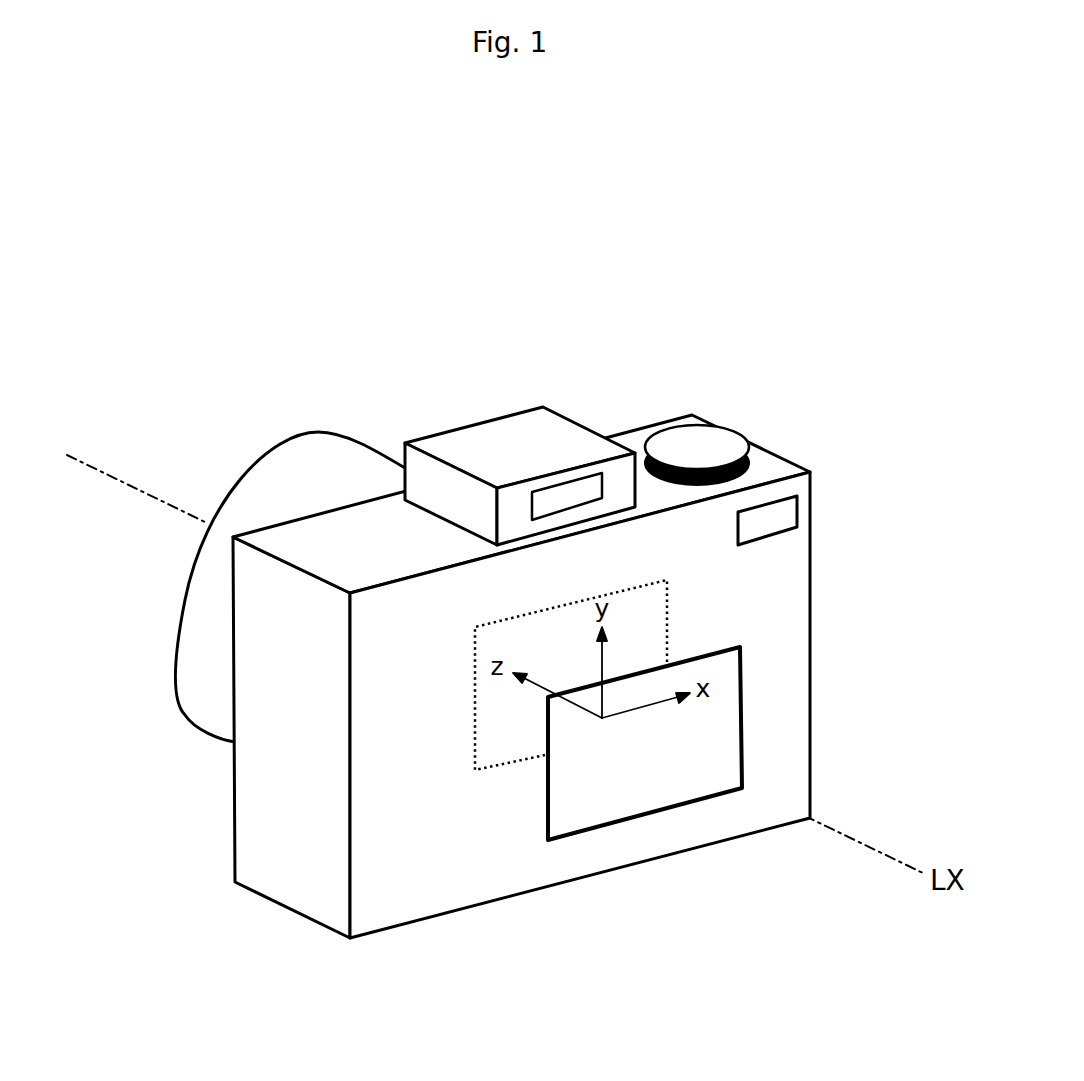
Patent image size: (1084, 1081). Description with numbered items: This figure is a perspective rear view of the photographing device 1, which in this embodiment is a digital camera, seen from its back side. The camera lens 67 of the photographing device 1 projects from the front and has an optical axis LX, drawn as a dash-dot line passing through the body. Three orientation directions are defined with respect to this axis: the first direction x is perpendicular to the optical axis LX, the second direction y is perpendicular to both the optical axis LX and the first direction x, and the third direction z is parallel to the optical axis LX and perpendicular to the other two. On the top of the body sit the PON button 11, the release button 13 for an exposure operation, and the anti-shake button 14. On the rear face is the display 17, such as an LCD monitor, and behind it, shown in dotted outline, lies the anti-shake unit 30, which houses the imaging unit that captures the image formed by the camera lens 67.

The photographing device 1 is at (692, 416).
The PON button 11 is at (810, 495).
The release button 13 is at (727, 428).
The anti-shake button 14 is at (545, 490).
The display 17 is at (742, 663).
The anti-shake unit 30 is at (667, 578).
The camera lens 67 is at (360, 442).